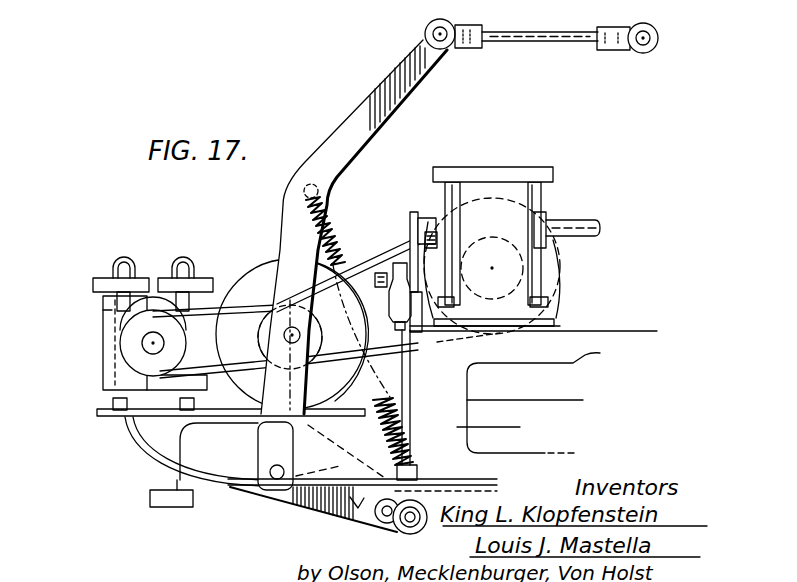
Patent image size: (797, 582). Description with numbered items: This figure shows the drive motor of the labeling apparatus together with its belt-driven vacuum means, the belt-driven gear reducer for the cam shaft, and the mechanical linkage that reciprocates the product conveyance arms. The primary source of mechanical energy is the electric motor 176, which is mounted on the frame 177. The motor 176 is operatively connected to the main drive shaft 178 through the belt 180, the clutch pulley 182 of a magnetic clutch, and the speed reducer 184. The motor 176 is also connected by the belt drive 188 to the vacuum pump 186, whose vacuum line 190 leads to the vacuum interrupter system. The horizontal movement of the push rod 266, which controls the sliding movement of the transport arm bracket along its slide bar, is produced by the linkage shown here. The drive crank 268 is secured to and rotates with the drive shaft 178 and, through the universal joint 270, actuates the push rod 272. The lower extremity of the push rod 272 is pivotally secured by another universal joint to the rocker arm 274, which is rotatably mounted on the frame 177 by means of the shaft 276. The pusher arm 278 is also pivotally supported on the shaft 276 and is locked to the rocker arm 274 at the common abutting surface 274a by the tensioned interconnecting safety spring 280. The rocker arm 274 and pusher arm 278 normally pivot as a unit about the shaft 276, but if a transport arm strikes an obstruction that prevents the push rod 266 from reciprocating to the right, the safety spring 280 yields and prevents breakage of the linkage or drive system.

The electric motor 176 is at (254, 279).
The frame 177 is at (515, 430).
The main drive shaft 178 is at (582, 223).
The belt 180 is at (476, 376).
The clutch pulley 182 is at (563, 259).
The speed reducer 184 is at (533, 158).
The vacuum pump 186 is at (103, 316).
The belt drive 188 is at (203, 277).
The vacuum line 190 is at (137, 428).
The push rod 266 is at (574, 45).
The drive crank 268 is at (420, 233).
The universal joint 270 is at (379, 262).
The push rod 272 is at (550, 408).
The rocker arm 274 is at (302, 498).
The abutting surface 274a is at (350, 498).
The shaft 276 is at (238, 489).
The pusher arm 278 is at (395, 96).
The safety spring 280 is at (373, 365).